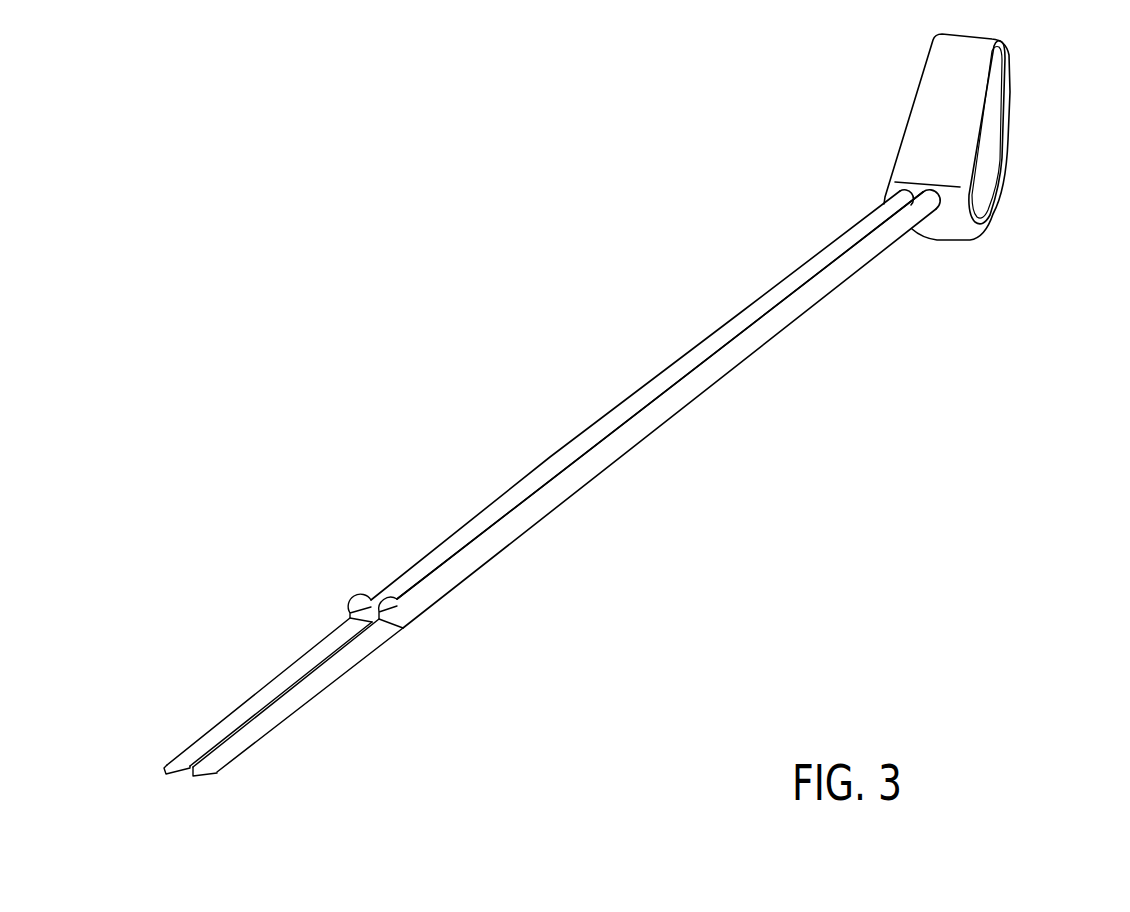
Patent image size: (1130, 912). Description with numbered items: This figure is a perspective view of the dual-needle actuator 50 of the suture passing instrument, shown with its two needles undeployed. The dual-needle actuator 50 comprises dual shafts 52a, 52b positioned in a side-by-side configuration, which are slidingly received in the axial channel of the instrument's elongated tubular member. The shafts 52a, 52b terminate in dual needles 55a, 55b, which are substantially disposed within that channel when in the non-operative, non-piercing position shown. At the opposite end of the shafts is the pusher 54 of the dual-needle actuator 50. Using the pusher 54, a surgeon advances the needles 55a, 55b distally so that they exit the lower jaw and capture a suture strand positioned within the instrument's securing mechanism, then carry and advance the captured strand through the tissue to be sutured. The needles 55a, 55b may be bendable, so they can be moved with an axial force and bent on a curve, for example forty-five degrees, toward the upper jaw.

The dual-needle actuator 50 is at (557, 313).
The shaft 52a is at (438, 546).
The shaft 52b is at (462, 572).
The pusher 54 is at (996, 94).
The needle 55a is at (192, 748).
The needle 55b is at (223, 755).